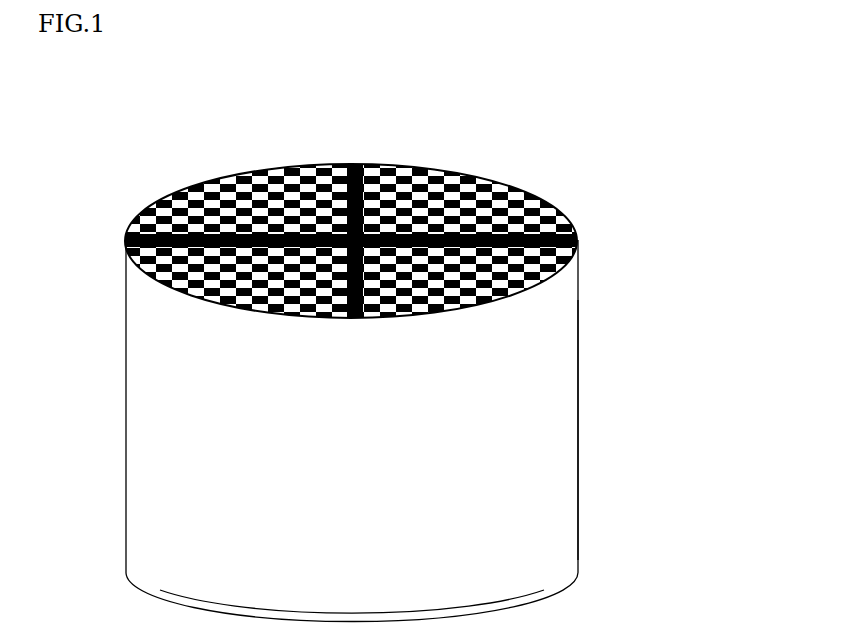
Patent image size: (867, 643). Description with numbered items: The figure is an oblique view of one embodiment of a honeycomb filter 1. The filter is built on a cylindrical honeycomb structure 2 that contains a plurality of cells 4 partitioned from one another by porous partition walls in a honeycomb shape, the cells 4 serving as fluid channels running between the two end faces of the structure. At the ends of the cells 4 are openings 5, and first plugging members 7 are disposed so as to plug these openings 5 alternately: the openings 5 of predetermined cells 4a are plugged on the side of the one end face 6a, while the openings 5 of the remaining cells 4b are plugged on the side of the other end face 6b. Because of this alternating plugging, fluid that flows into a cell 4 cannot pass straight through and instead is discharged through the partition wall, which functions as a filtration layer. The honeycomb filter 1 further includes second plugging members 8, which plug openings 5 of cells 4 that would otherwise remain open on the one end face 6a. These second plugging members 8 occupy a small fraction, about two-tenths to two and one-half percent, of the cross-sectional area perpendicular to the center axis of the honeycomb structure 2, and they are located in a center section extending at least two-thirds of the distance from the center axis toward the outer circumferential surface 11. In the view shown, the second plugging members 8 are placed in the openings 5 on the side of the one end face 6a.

The honeycomb filter 1 is at (540, 83).
The honeycomb structure 2 is at (513, 445).
The cells 4 is at (202, 185).
The predetermined cells 4a is at (303, 196).
The remaining cells 4b is at (205, 192).
The openings 5 is at (490, 212).
The one end face 6a is at (530, 172).
The other end face 6b is at (558, 603).
The first plugging members 7 is at (405, 178).
The second plugging members 8 is at (184, 238).
The outer circumferential surface 11 is at (578, 334).